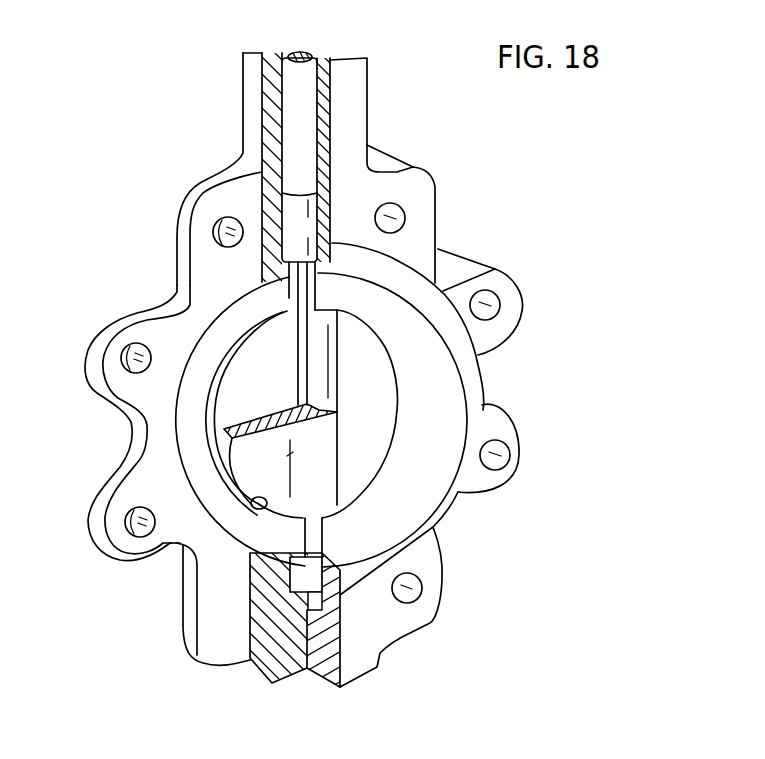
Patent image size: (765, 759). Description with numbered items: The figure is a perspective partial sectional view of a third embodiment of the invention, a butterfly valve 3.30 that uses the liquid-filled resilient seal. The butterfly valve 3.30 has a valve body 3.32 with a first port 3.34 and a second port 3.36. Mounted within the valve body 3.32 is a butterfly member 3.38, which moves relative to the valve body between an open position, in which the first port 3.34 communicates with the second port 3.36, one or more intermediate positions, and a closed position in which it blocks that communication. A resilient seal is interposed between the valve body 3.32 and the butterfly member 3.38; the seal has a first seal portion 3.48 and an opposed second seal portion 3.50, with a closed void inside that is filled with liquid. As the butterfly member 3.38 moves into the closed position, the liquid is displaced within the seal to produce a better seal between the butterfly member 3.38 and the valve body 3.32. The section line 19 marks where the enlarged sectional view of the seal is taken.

The butterfly valve 3.30 is at (146, 265).
The valve body 3.32 is at (422, 205).
The first port 3.34 is at (428, 375).
The second port 3.36 is at (108, 418).
The butterfly member 3.38 is at (368, 462).
The first seal portion 3.48 is at (257, 348).
The second seal portion 3.50 is at (257, 505).
The section line 19 is at (202, 438).